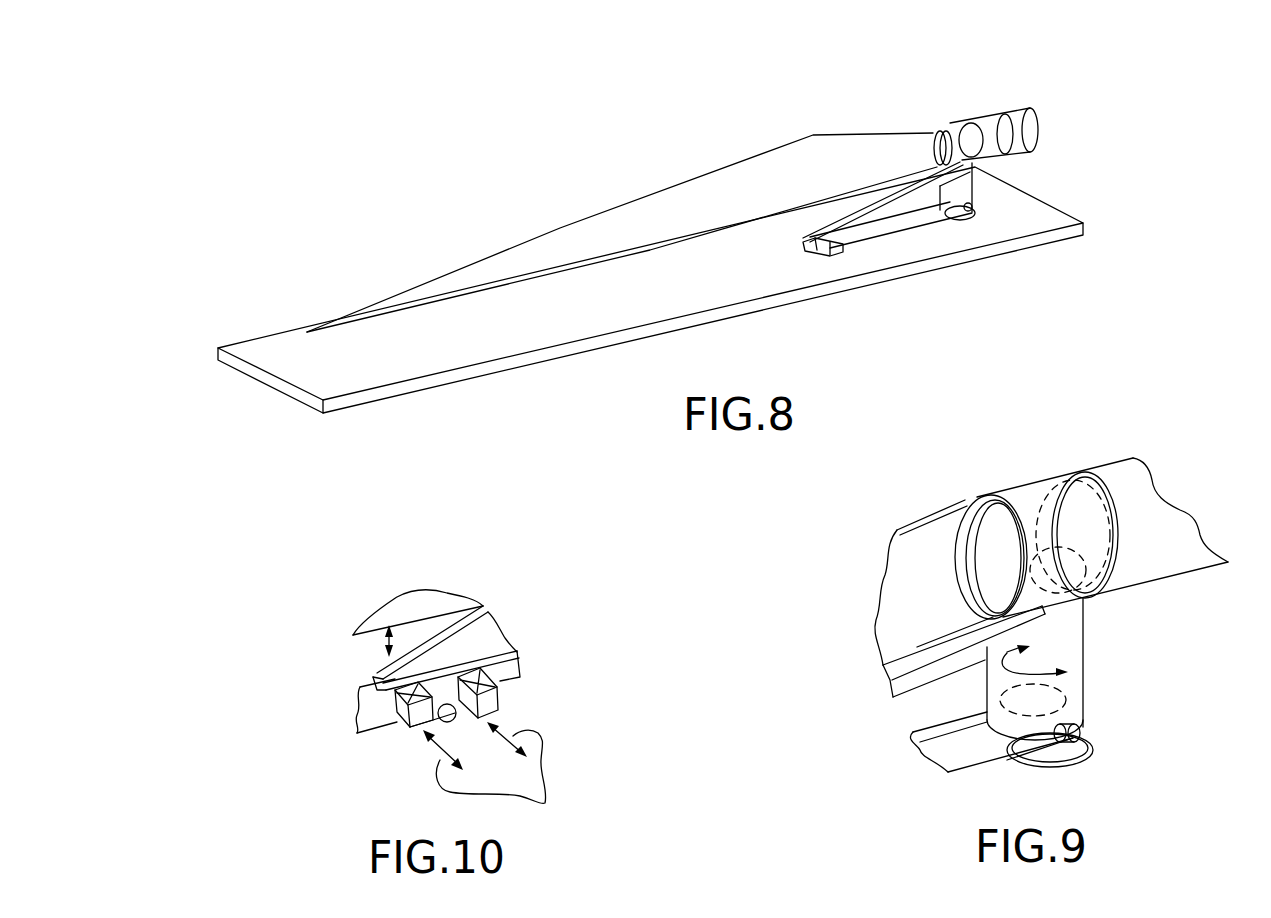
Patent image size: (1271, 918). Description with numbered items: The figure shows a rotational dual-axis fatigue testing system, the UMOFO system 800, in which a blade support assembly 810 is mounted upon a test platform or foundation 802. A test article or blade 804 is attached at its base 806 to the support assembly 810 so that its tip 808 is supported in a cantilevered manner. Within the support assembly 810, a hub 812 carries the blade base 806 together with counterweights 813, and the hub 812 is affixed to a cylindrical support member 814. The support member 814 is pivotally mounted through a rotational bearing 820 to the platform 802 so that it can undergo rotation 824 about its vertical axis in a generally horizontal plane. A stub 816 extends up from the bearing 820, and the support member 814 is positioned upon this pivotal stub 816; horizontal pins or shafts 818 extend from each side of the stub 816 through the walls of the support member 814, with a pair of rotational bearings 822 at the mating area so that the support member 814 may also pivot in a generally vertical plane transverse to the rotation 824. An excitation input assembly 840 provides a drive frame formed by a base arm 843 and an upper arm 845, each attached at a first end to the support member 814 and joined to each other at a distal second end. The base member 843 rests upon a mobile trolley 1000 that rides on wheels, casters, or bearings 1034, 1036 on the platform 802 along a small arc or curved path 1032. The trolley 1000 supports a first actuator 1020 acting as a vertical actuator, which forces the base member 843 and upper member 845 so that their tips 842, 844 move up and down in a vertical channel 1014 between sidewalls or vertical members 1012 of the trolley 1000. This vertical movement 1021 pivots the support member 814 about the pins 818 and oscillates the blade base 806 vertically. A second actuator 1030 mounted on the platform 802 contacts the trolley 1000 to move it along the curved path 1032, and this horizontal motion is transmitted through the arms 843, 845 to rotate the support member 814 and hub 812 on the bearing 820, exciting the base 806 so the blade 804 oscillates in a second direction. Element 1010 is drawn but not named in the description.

In FIG. 8, the rotational UMOFO system 800 is at (246, 240).
In FIG. 8, the test platform 802 is at (333, 373).
In FIG. 8, the blade 804 is at (558, 210).
In FIG. 8, the base 806 is at (938, 131).
In FIG. 8, the tip 808 is at (305, 325).
In FIG. 8, the blade support assembly 810 is at (1008, 102).
In FIG. 9, the blade support assembly 810 is at (1220, 455).
In FIG. 9, the hub 812 is at (1020, 493).
In FIG. 9, the counterweights 813 is at (1175, 520).
In FIG. 9, the support member 814 is at (1083, 614).
In FIG. 9, the stub 816 is at (1055, 698).
In FIG. 9, the pins/shafts 818 is at (1085, 728).
In FIG. 9, the rotational bearing 820 is at (1094, 742).
In FIG. 9, the rotational bearings 822 is at (1068, 757).
In FIG. 9, the rotation 824 is at (1030, 670).
In FIG. 8, the excitation input assembly 840 is at (879, 250).
In FIG. 10, the tip of base arm 842 is at (513, 664).
In FIG. 9, the base arm 843 is at (983, 760).
In FIG. 10, the tip of upper arm 844 is at (483, 604).
In FIG. 9, the upper arm 845 is at (965, 652).
In FIG. 10, the mobile trolley 1000 is at (312, 610).
In FIG. 10, the body 1010 is at (410, 723).
In FIG. 10, the vertical members 1012 is at (397, 716).
In FIG. 10, the vertical channel 1014 is at (387, 705).
In FIG. 10, the first actuator 1020 is at (492, 640).
In FIG. 10, the vertical movement 1021 is at (384, 649).
In FIG. 10, the second actuator 1030 is at (457, 737).
In FIG. 10, the curved path 1032 is at (511, 769).
In FIG. 10, the wheels, casters, or bearings 1034 is at (417, 730).
In FIG. 10, the wheels, casters, or bearings 1036 is at (487, 707).